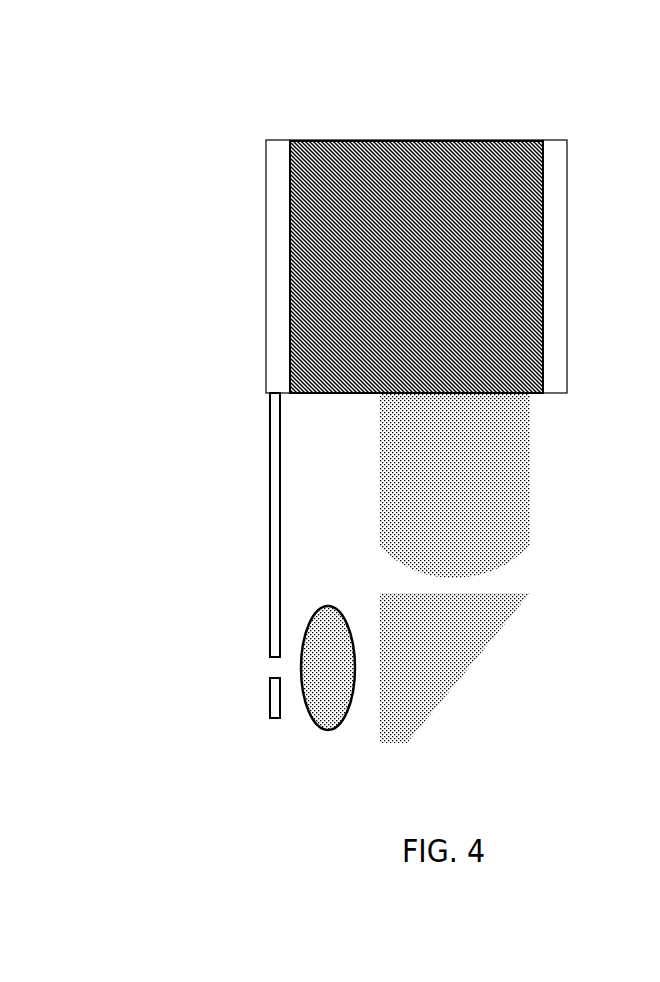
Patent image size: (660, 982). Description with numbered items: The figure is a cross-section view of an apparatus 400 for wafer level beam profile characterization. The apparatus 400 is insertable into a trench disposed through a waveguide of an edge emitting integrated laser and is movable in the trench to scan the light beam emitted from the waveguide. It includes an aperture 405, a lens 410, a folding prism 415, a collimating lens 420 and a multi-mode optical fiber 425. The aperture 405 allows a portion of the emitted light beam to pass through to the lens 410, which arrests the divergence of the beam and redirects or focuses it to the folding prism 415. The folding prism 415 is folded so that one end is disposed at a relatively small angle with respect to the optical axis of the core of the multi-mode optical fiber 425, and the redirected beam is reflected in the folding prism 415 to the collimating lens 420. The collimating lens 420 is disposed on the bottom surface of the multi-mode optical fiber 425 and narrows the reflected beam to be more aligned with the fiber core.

The apparatus 400 is at (180, 88).
The aperture 405 is at (265, 673).
The lens 410 is at (310, 622).
The folding prism 415 is at (380, 607).
The collimating lens 420 is at (515, 560).
The multi-mode optical fiber 425 is at (320, 139).